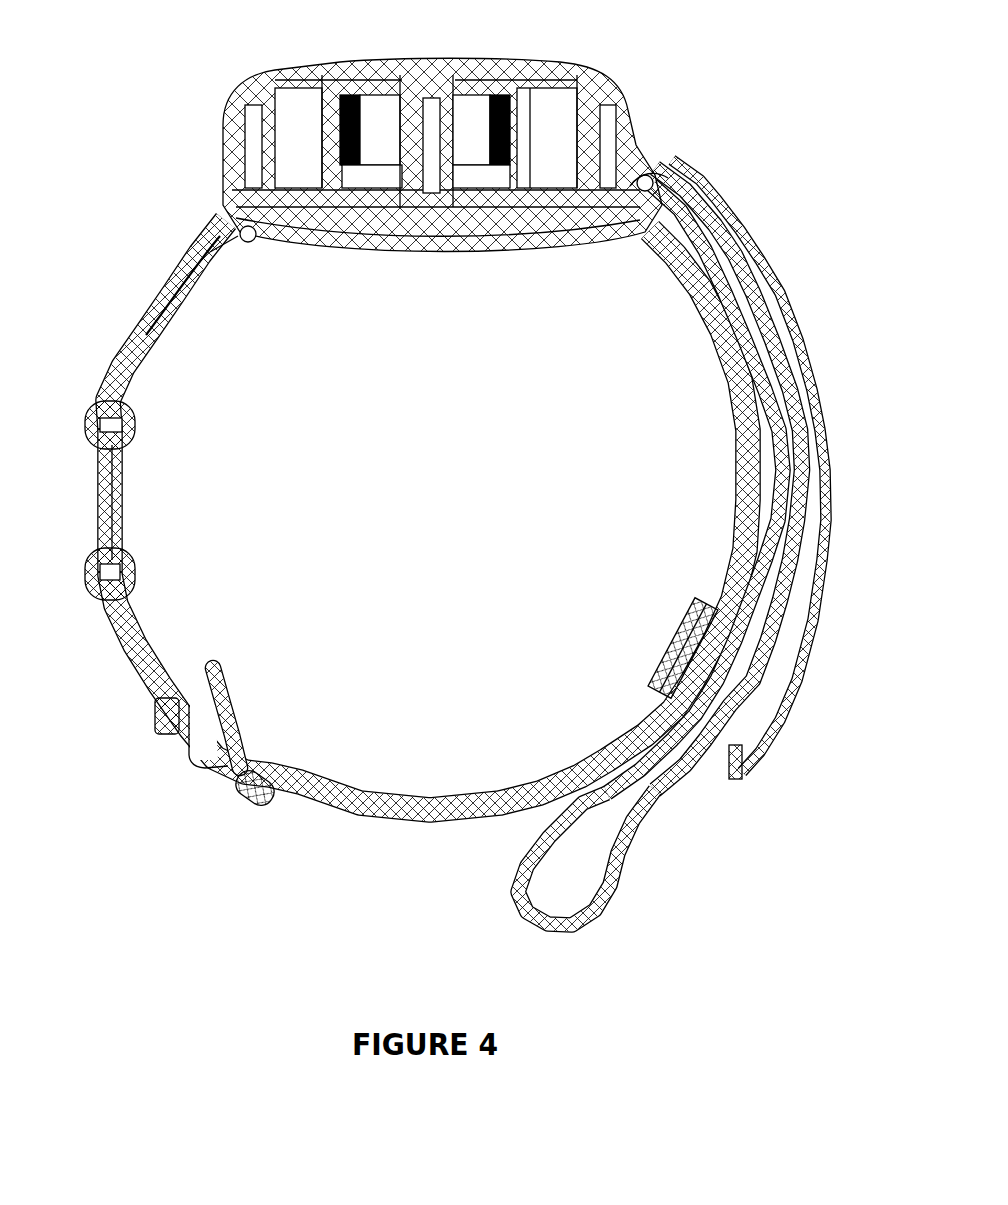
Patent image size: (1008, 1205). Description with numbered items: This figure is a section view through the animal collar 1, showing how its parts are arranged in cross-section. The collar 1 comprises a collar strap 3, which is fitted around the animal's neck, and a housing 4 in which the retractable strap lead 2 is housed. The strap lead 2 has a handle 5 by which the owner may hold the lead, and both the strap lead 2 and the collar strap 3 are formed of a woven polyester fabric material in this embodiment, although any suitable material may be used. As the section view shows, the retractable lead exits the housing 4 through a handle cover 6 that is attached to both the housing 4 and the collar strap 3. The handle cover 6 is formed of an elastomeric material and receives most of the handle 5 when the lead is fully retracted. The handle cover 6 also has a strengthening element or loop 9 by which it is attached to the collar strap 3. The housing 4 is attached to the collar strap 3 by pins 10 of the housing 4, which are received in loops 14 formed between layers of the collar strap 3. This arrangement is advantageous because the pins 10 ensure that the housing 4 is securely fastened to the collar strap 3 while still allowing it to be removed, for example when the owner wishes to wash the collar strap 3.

The animal collar 1 is at (108, 860).
The strap lead 2 is at (644, 176).
The collar strap 3 is at (370, 818).
The housing 4 is at (366, 58).
The handle 5 is at (613, 896).
The handle cover 6 is at (818, 393).
The strengthening element or loop 9 is at (674, 662).
The pins 10 is at (240, 230).
The loops 14 is at (236, 243).